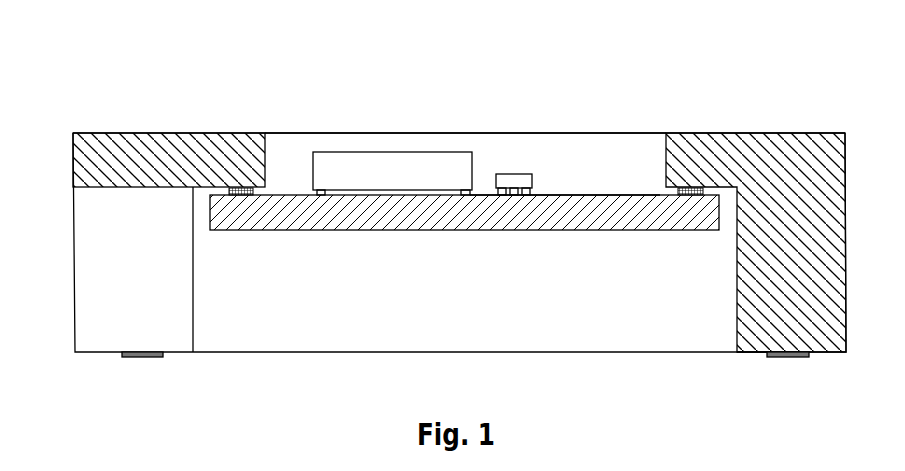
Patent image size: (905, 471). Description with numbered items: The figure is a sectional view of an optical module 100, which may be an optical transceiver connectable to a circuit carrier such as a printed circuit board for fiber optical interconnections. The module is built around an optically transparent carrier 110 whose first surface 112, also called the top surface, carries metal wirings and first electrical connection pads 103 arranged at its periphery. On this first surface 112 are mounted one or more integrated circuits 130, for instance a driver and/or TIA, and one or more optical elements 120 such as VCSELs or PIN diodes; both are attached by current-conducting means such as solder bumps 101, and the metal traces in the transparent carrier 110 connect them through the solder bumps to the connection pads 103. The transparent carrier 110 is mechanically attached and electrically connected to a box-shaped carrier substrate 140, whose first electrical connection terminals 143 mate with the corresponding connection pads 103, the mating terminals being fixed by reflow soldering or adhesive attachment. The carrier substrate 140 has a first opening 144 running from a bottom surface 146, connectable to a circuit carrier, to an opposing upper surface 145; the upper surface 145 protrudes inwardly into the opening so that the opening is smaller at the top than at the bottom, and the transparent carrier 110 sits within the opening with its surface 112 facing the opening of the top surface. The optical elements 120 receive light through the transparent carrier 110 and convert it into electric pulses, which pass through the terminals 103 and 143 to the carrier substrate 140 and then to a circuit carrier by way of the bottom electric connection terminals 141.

The optical module 100 is at (114, 44).
The solder bumps 101 is at (538, 191).
The first electrical connection pads 103 is at (264, 190).
The optically transparent carrier 110 is at (373, 230).
The first surface 112 is at (610, 194).
The optical elements 120 is at (512, 180).
The integrated circuits 130 is at (369, 166).
The carrier substrate 140 is at (206, 150).
The bottom electric connection terminals 141 is at (791, 358).
The first electrical connection terminals 143 is at (674, 191).
The first opening 144 is at (534, 148).
The upper surface 145 is at (706, 133).
The bottom surface 146 is at (749, 355).